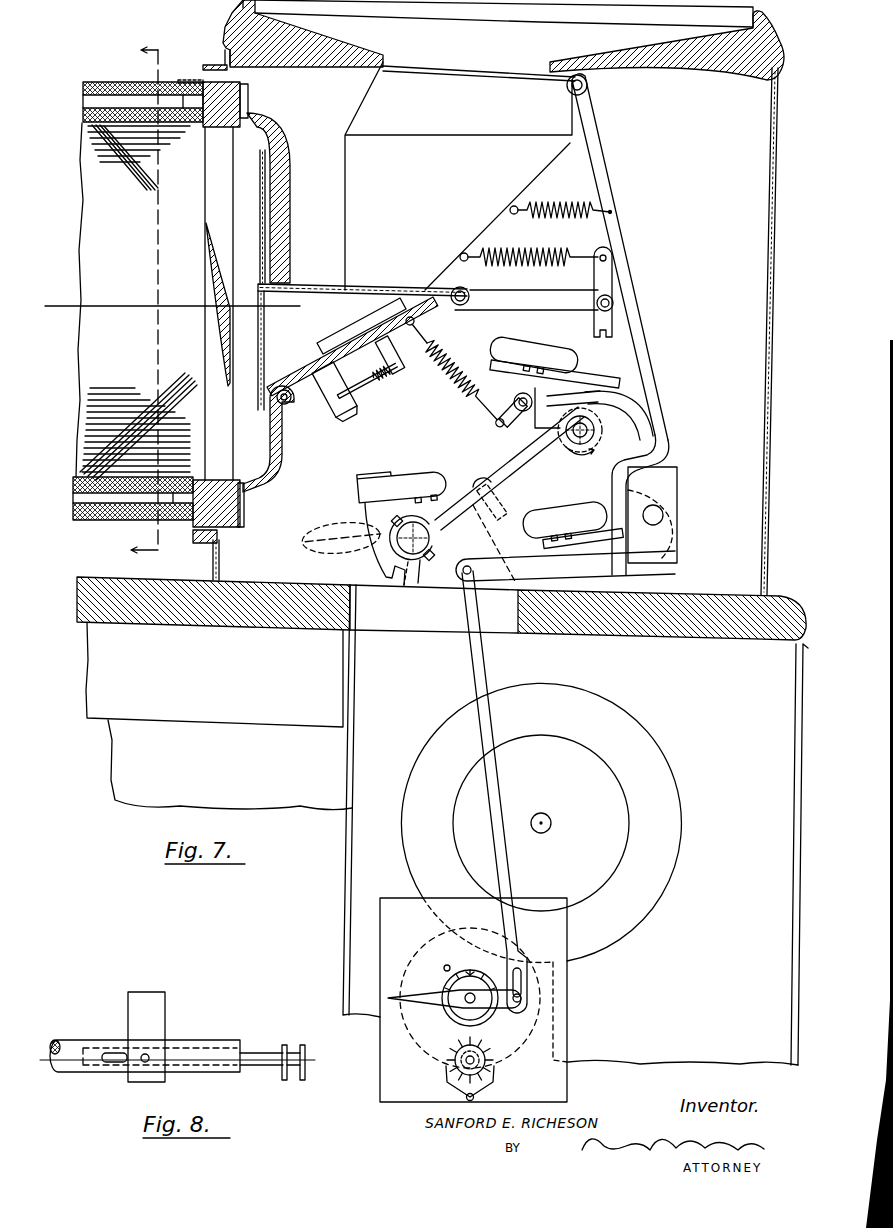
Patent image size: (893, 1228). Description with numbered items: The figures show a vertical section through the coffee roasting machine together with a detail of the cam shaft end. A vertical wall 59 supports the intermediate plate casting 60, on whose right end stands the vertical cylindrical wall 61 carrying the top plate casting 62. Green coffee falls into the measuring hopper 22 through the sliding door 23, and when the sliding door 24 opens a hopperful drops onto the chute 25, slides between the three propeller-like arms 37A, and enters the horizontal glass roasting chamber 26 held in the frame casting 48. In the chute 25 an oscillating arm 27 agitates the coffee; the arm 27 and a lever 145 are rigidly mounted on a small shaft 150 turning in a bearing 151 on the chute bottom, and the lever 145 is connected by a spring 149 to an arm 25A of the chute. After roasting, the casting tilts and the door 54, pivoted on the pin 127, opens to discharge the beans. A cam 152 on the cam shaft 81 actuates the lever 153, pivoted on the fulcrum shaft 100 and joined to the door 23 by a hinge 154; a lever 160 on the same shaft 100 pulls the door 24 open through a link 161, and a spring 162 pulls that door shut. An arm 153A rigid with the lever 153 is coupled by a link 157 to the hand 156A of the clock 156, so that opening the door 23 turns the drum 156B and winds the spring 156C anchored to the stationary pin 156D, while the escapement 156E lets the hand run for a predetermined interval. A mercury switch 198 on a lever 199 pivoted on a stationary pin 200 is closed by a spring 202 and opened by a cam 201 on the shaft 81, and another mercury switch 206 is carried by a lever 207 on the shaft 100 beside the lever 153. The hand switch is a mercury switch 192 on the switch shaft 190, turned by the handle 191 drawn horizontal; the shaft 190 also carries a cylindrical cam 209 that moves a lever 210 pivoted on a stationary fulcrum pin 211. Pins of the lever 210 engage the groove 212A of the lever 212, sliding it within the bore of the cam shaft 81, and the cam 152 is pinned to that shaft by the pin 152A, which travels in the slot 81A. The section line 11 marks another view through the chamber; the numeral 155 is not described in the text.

In FIG. 7, the top plate casting 62 is at (230, 22).
In FIG. 7, the vertical cylindrical wall 61 is at (776, 413).
In FIG. 7, the section line 11- 11 is at (158, 303).
In FIG. 7, the roasting chamber 26 is at (172, 301).
In FIG. 7, the arms 37A is at (204, 270).
In FIG. 7, the frame casting 48 is at (286, 203).
In FIG. 7, the sliding door 24 is at (451, 293).
In FIG. 7, the sliding door 23 is at (435, 73).
In FIG. 7, the measuring hopper 22 is at (532, 184).
In FIG. 7, the hinge 154 is at (588, 87).
In FIG. 7, the lever 153 is at (640, 345).
In FIG. 7, the cam 201 is at (609, 412).
In FIG. 7, the fulcrum shaft 100 is at (663, 512).
In FIG. 7, the lever 207 is at (680, 514).
In FIG. 7, the tension spring 155 is at (557, 220).
In FIG. 7, the spring 162 is at (525, 252).
In FIG. 7, the link 161 is at (533, 306).
In FIG. 7, the lever 160 is at (596, 328).
In FIG. 7, the chute 25 is at (306, 360).
In FIG. 7, the oscillating arm 27 is at (355, 327).
In FIG. 7, the bearing 151 is at (326, 366).
In FIG. 7, the small shaft 150 is at (334, 398).
In FIG. 7, the lever 145 is at (352, 392).
In FIG. 7, the spring 149 is at (388, 379).
In FIG. 7, the arm 25A is at (397, 368).
In FIG. 7, the spring 202 is at (453, 348).
In FIG. 7, the stationary pin 200 is at (530, 404).
In FIG. 7, the mercury switch 198 is at (534, 358).
In FIG. 7, the lever 199 is at (592, 370).
In FIG. 7, the cam 152 is at (567, 431).
In FIG. 8, the cam 152 is at (146, 1037).
In FIG. 7, the cam shaft 81 is at (580, 459).
In FIG. 8, the cam shaft 81 is at (85, 1037).
In FIG. 7, the pin 127 is at (292, 405).
In FIG. 7, the door 54 is at (276, 468).
In FIG. 7, the mercury switch 192 is at (416, 477).
In FIG. 7, the switch shaft 190 is at (400, 586).
In FIG. 7, the cylindrical cam 209 is at (419, 586).
In FIG. 7, the stationary fulcrum pin 211 is at (488, 523).
In FIG. 7, the lever 210 is at (500, 475).
In FIG. 7, the handle 191 is at (333, 545).
In FIG. 7, the mercury switch 206 is at (572, 524).
In FIG. 7, the arm 153A is at (541, 556).
In FIG. 7, the intermediate plate casting 60 is at (94, 577).
In FIG. 7, the vertical wall 59 is at (796, 739).
In FIG. 7, the link 157 is at (478, 673).
In FIG. 7, the clock 156 is at (473, 1000).
In FIG. 7, the hand 156A is at (425, 1009).
In FIG. 7, the drum 156B is at (492, 1006).
In FIG. 7, the spring 156C is at (486, 965).
In FIG. 7, the stationary pin 156D is at (444, 968).
In FIG. 7, the escapement 156E is at (491, 1075).
In FIG. 8, the slot 81A is at (110, 1060).
In FIG. 8, the pin 152A is at (150, 1056).
In FIG. 8, the lever 212 is at (266, 1061).
In FIG. 8, the groove 212A is at (301, 1082).